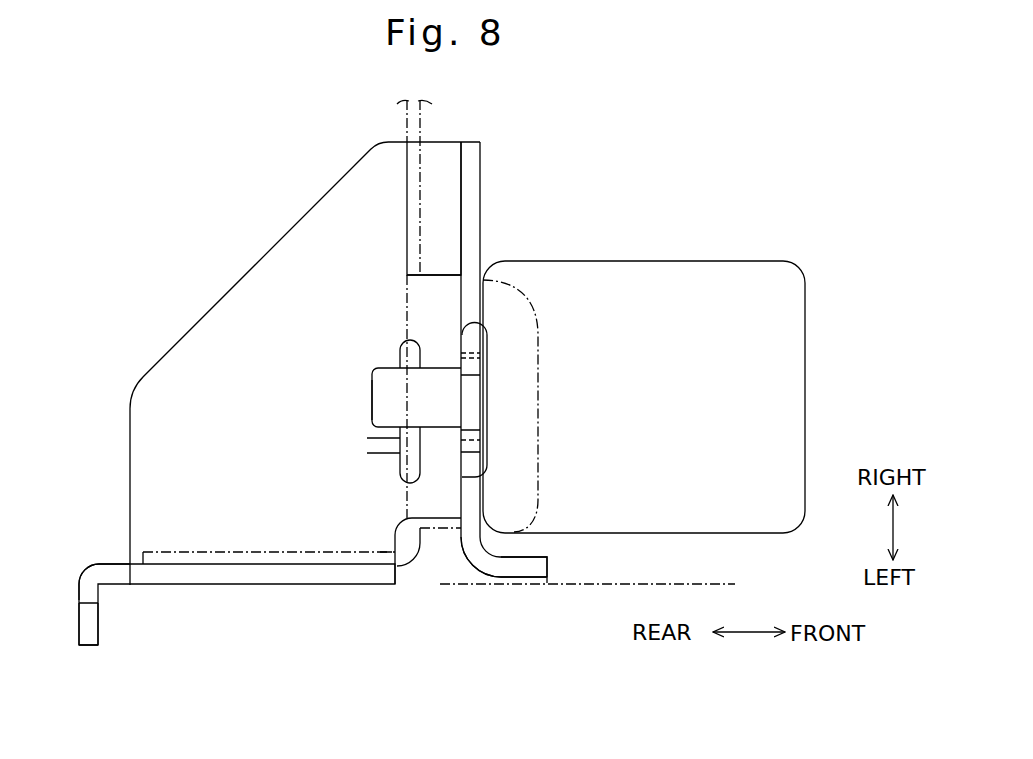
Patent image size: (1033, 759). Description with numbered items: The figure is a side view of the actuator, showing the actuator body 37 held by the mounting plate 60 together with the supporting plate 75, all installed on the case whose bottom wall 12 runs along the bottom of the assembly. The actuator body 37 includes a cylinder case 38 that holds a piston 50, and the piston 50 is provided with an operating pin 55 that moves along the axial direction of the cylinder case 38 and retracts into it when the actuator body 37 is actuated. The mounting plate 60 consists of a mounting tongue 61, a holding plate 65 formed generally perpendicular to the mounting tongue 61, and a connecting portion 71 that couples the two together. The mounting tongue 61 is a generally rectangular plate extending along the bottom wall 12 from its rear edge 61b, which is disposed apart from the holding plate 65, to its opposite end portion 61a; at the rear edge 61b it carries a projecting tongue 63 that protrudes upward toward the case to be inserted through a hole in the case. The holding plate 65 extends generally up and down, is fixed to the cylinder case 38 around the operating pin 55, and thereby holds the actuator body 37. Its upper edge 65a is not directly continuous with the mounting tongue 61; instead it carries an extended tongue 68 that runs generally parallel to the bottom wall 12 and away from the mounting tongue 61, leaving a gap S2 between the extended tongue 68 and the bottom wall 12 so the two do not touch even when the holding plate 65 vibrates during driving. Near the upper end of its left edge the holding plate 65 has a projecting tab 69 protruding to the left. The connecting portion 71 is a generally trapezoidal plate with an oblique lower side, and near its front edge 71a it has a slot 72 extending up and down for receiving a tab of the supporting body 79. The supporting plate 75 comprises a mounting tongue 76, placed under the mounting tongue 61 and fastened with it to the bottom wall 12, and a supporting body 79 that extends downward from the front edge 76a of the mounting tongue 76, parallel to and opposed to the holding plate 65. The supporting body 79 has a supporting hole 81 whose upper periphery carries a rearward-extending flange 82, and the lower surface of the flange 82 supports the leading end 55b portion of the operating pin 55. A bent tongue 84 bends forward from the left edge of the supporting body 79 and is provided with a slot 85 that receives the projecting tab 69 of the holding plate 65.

The mounting plate 60 is at (232, 236).
The connecting portion 71 is at (328, 237).
The front edge 71a is at (443, 250).
The supporting plate 75 is at (393, 267).
The supporting body 79 is at (425, 138).
The supporting hole 81 is at (443, 170).
The holding plate 65 is at (490, 208).
The upper edge 65a is at (465, 538).
The extended tongue 68 is at (515, 570).
The projecting tab 69 is at (470, 405).
The slot 85 is at (488, 358).
The bent tongue 84 is at (523, 322).
The actuator body 37 is at (647, 337).
The cylinder case 38 is at (677, 285).
The operating pin 55 is at (331, 383).
The piston 50 is at (371, 375).
The leading end 55b is at (380, 412).
The slot 72 is at (403, 475).
The flange 82 is at (372, 452).
The mounting tongue 61 is at (252, 570).
The upright portion of base plate 61a is at (387, 573).
The rear edge 61b is at (117, 573).
The projecting tongue 63 is at (86, 625).
The mounting tongue 76 is at (210, 556).
The front edge 76a is at (378, 562).
The bottom wall 12 is at (587, 628).
The gap S2 is at (553, 580).